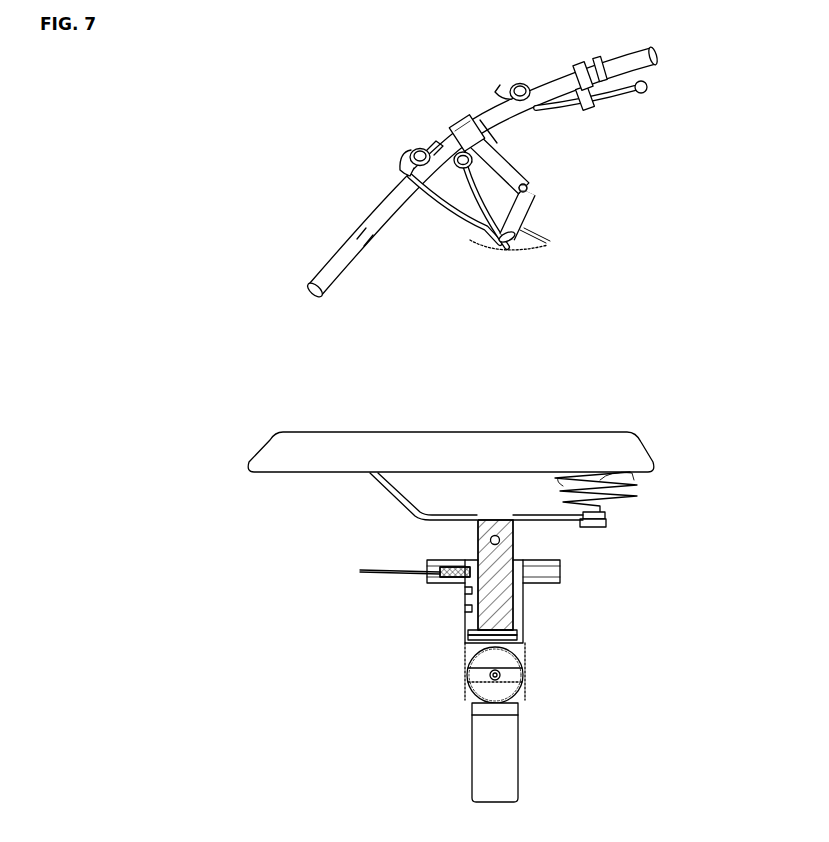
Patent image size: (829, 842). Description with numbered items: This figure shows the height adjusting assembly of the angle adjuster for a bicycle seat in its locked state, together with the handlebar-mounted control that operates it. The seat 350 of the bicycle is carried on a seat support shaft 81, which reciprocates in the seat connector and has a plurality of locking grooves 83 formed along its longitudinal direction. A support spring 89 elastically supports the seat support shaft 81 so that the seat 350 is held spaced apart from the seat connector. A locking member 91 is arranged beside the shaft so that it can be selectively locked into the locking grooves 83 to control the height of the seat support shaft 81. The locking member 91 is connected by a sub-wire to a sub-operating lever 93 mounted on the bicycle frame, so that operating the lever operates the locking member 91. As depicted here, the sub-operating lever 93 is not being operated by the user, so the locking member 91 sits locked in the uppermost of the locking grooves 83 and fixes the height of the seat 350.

The seat 350 is at (594, 440).
The sub-operating lever 93 is at (418, 150).
The locking member 91 is at (460, 563).
The seat support shaft 81 is at (510, 600).
The locking grooves 83 is at (465, 610).
The support spring 89 is at (517, 637).